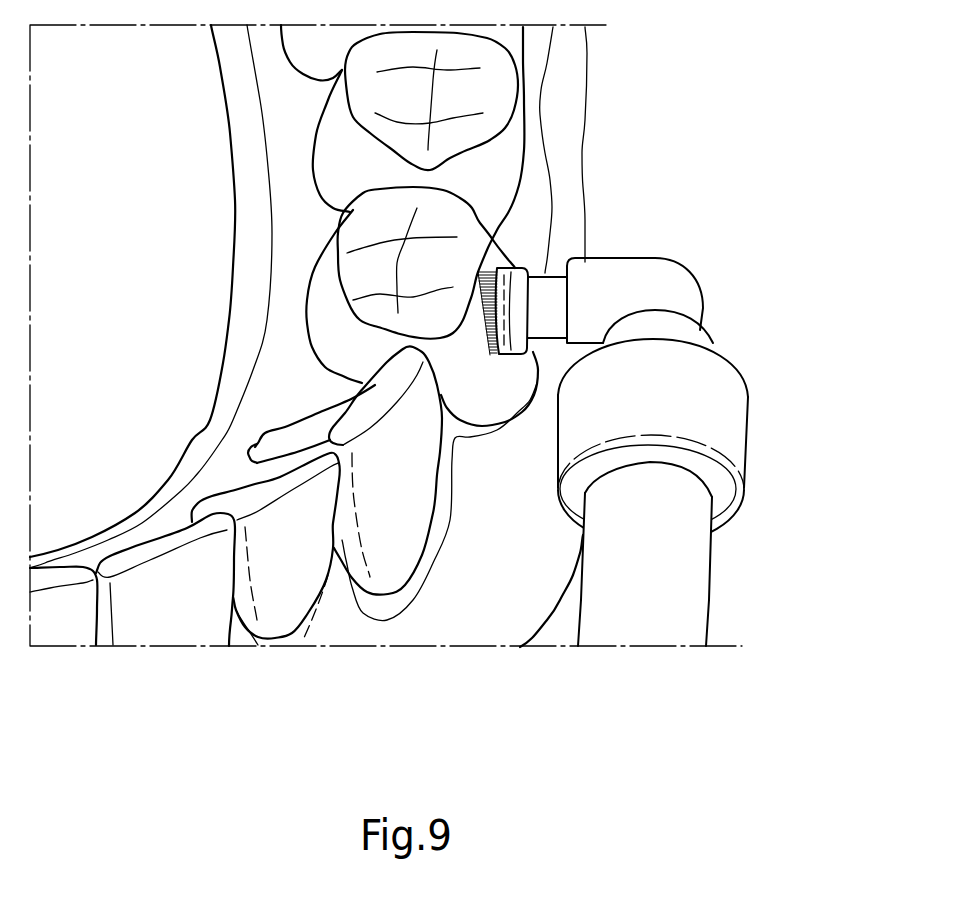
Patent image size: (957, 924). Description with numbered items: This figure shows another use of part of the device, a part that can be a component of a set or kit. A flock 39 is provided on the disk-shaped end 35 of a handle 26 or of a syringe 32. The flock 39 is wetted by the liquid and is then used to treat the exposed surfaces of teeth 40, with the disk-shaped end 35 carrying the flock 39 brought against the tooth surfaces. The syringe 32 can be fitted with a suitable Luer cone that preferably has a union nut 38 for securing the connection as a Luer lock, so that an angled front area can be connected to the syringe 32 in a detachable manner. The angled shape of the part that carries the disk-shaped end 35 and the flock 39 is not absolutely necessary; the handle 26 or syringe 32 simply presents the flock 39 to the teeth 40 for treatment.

The handle 26 is at (682, 567).
The syringe 32 is at (638, 632).
The disk-shaped end 35 is at (524, 272).
The union nut 38 is at (712, 395).
The flock 39 is at (497, 264).
The teeth 40 is at (457, 220).